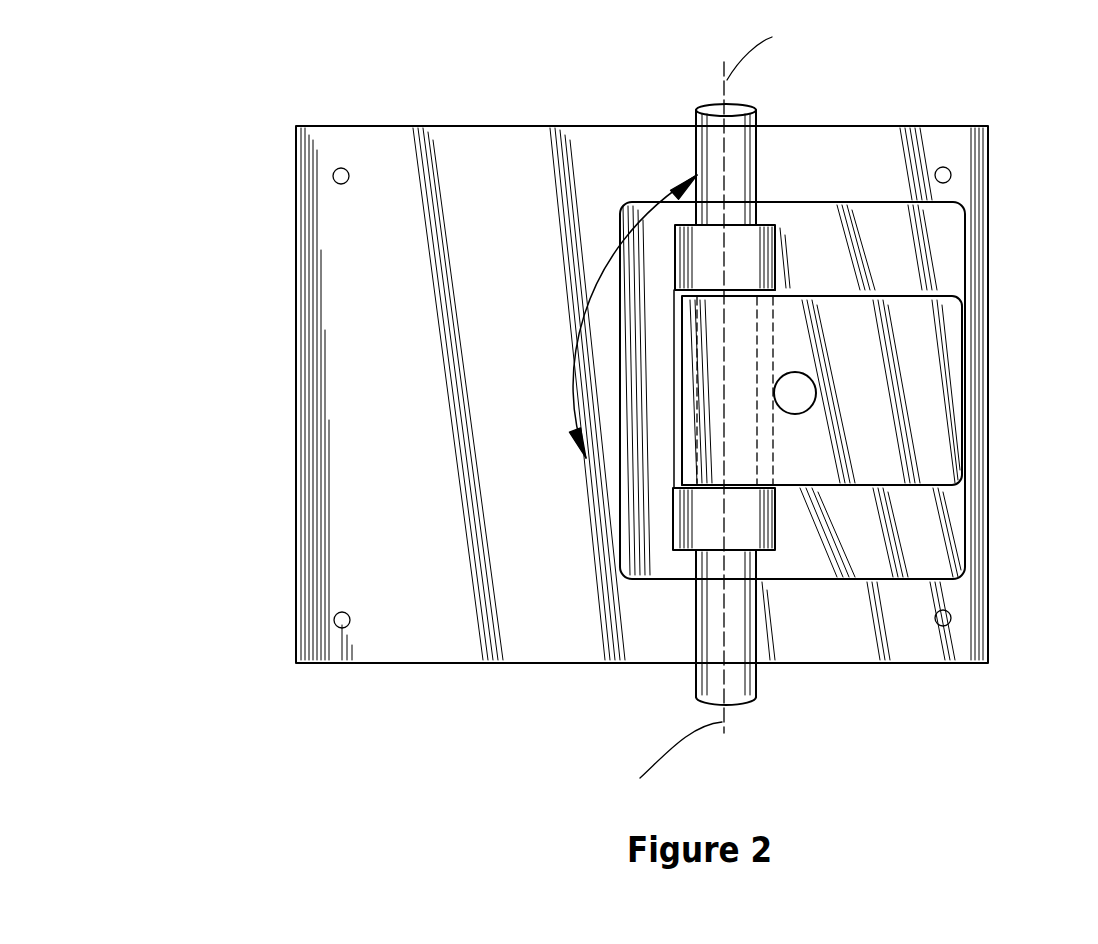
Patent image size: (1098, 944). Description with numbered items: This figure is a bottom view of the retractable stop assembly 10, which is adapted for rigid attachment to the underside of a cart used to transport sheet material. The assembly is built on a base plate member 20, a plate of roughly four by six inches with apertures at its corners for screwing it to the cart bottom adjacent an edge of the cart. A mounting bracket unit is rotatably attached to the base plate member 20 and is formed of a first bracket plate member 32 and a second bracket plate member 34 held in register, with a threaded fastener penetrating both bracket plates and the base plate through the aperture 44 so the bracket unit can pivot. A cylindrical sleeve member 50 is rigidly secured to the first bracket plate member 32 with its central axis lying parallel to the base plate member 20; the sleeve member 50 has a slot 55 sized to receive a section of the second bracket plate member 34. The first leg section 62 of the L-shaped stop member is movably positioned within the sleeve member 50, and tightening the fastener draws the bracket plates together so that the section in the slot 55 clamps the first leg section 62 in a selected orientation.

The retractable stop assembly 10 is at (358, 733).
The base plate member 20 is at (877, 142).
The first bracket plate member 32 is at (942, 237).
The second bracket plate member 34 is at (925, 338).
The aperture 44 is at (816, 393).
The cylindrical sleeve member 50 is at (687, 265).
The slot 55 is at (775, 293).
The first leg section 62 is at (718, 165).